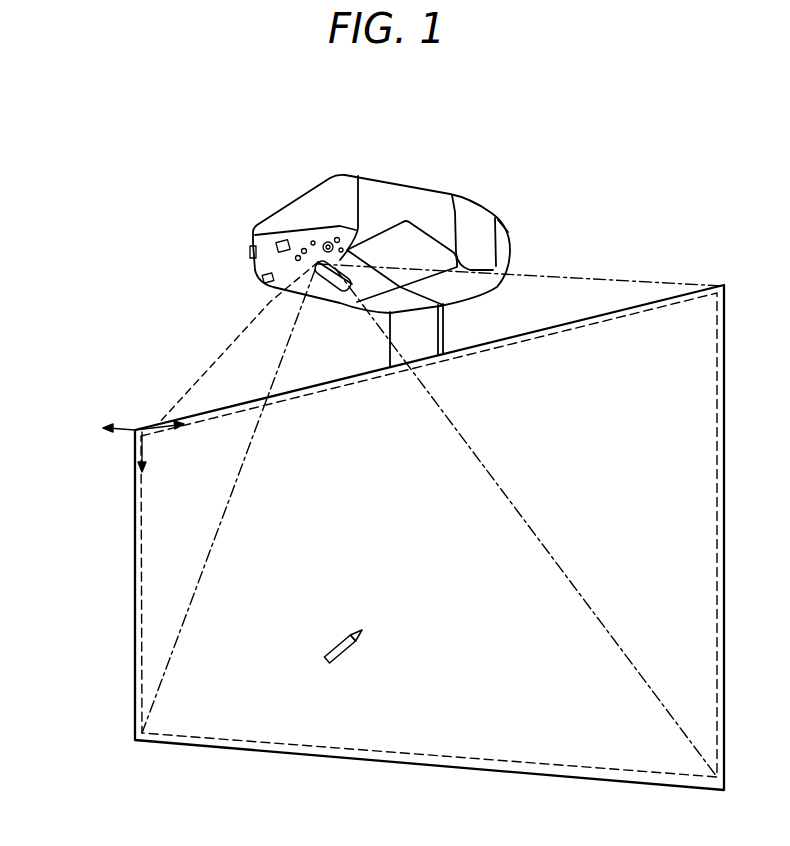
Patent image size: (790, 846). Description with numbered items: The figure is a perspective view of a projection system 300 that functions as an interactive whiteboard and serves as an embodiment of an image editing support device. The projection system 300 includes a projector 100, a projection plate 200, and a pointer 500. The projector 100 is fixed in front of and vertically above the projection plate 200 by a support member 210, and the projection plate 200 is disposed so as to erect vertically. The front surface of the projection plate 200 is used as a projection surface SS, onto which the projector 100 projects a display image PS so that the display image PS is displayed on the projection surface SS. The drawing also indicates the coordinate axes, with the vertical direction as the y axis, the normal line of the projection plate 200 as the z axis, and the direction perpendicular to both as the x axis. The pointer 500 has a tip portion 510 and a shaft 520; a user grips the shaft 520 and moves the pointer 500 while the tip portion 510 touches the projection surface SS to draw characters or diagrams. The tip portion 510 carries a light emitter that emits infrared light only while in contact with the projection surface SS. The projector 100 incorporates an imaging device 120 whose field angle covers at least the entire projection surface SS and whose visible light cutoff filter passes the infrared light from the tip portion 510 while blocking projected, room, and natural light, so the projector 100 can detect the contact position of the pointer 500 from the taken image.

The projection system 300 is at (112, 149).
The projector 100 is at (270, 227).
The imaging device 120 is at (272, 290).
The support member 210 is at (445, 323).
The projection plate 200 is at (135, 565).
The projection surface SS is at (140, 610).
The display image PS is at (140, 653).
The pointer 500 is at (429, 666).
The tip portion 510 is at (357, 630).
The shaft 520 is at (343, 652).